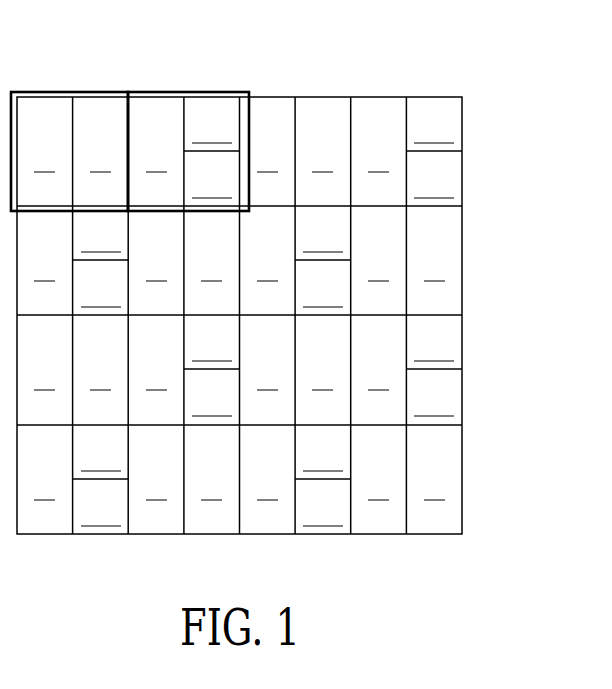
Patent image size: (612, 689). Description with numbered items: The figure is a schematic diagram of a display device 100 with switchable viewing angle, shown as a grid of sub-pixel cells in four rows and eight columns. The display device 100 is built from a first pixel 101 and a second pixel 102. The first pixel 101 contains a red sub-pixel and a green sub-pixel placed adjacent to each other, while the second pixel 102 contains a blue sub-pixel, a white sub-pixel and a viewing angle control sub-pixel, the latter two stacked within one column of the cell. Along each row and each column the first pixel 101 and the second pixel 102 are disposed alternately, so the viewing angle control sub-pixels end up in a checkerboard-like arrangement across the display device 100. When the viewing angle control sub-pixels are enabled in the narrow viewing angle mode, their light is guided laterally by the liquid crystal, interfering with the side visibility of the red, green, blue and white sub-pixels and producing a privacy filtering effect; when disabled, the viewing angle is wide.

The display device with switchable viewing angle 100 is at (537, 597).
The first pixel 101 is at (78, 91).
The second pixel 102 is at (184, 91).